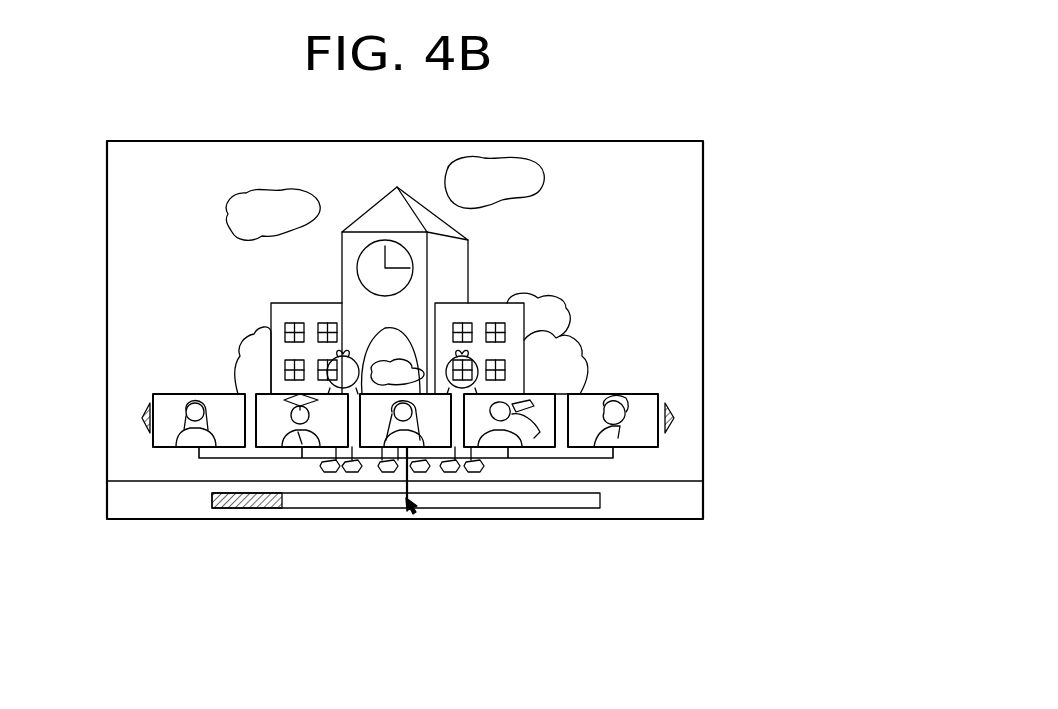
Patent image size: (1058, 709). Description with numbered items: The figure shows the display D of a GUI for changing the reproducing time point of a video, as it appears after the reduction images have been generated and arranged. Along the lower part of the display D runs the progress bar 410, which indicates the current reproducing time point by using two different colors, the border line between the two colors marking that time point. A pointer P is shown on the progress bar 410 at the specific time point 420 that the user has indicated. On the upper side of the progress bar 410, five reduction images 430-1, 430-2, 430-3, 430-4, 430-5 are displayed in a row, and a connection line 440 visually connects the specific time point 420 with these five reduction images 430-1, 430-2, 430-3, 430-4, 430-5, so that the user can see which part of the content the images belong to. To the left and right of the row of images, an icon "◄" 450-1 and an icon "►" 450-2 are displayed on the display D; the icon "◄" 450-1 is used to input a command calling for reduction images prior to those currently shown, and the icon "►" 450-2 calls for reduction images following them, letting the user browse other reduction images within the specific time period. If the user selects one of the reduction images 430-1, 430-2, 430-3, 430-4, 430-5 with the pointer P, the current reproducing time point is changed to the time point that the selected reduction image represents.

The display D is at (703, 140).
The progress bar 410 is at (557, 508).
The specific time point 420 is at (405, 503).
The pointer P is at (418, 502).
The reduction image 430-1 is at (153, 394).
The reduction image 430-2 is at (256, 394).
The reduction image 430-3 is at (430, 394).
The reduction image 430-4 is at (553, 394).
The reduction image 430-5 is at (660, 394).
The connection line 440 is at (613, 458).
The icon "◄" 450-1 is at (142, 412).
The icon "►" 450-2 is at (674, 412).